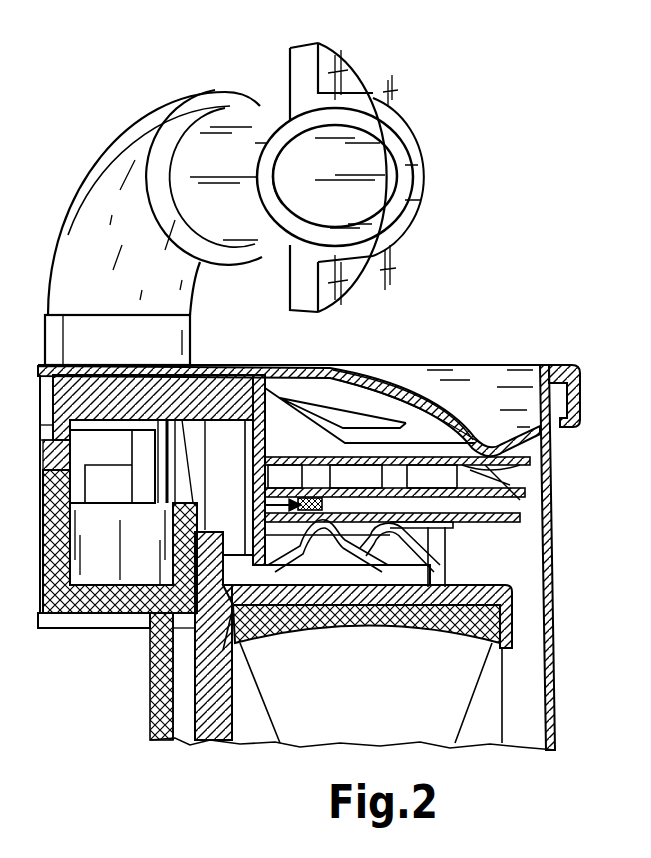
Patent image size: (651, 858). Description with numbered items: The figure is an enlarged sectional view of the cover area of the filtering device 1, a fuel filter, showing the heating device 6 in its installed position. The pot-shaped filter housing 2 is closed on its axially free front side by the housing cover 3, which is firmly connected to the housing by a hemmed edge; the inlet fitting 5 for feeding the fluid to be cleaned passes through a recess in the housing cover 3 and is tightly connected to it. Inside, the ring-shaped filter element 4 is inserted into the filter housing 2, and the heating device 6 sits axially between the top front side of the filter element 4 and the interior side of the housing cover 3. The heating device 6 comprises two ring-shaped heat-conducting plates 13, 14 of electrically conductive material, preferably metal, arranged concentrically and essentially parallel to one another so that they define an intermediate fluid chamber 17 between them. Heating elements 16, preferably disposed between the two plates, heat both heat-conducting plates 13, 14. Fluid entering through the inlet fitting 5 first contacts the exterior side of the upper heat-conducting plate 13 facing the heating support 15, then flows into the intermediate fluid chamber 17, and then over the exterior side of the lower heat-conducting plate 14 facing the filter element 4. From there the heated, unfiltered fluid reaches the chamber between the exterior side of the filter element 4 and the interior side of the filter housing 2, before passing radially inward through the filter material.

The filtering device 1 is at (488, 201).
The filter housing 2 is at (555, 653).
The housing cover 3 is at (462, 412).
The filter element 4 is at (492, 708).
The inlet fitting 5 is at (137, 143).
The heating device 6 is at (497, 528).
The heat-conducting plate 13 is at (520, 511).
The heat-conducting plate 14 is at (508, 522).
The heating support 15 is at (507, 477).
The heating elements 16 is at (262, 502).
The intermediate fluid chamber 17 is at (443, 503).